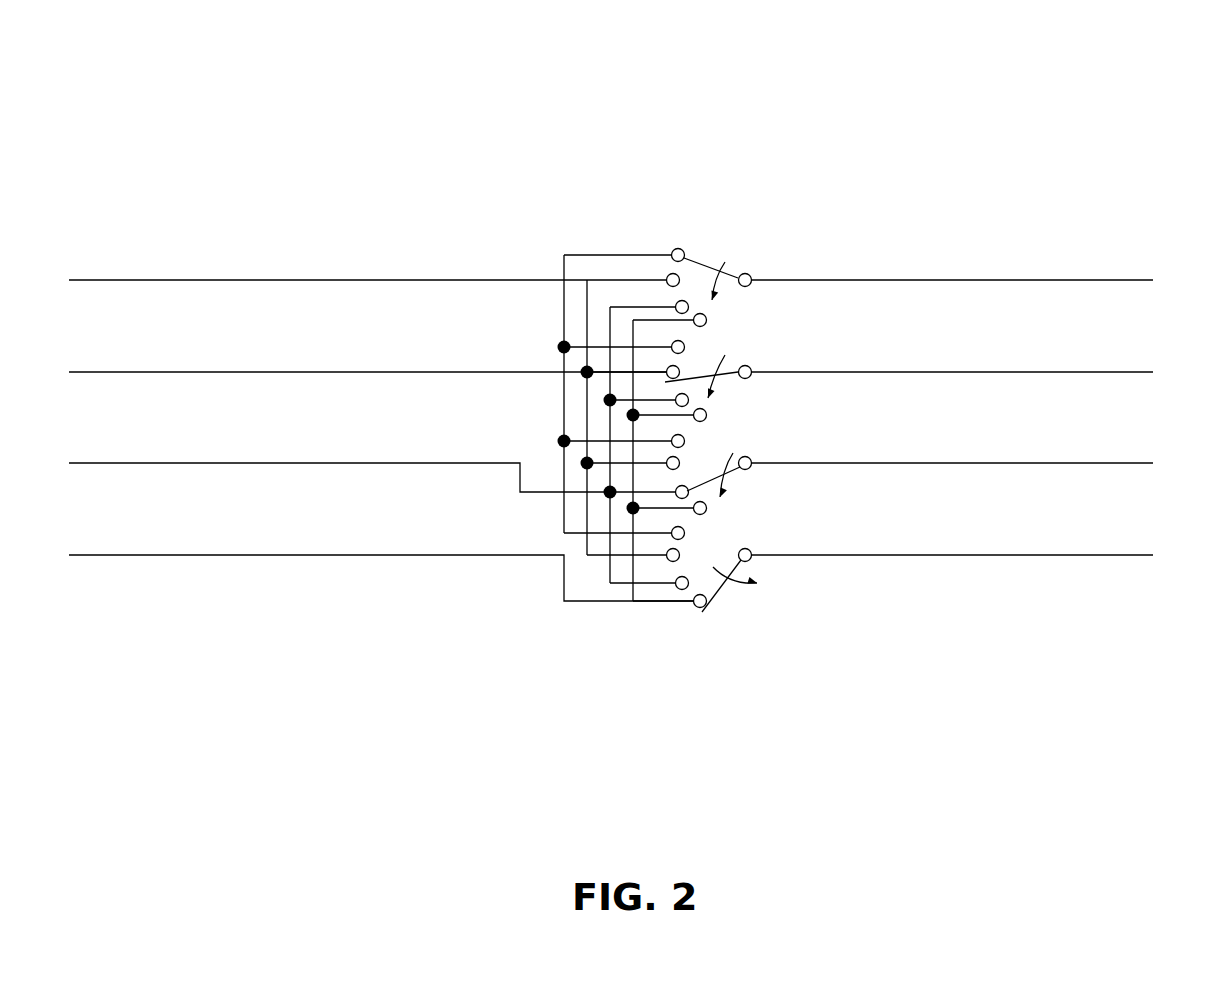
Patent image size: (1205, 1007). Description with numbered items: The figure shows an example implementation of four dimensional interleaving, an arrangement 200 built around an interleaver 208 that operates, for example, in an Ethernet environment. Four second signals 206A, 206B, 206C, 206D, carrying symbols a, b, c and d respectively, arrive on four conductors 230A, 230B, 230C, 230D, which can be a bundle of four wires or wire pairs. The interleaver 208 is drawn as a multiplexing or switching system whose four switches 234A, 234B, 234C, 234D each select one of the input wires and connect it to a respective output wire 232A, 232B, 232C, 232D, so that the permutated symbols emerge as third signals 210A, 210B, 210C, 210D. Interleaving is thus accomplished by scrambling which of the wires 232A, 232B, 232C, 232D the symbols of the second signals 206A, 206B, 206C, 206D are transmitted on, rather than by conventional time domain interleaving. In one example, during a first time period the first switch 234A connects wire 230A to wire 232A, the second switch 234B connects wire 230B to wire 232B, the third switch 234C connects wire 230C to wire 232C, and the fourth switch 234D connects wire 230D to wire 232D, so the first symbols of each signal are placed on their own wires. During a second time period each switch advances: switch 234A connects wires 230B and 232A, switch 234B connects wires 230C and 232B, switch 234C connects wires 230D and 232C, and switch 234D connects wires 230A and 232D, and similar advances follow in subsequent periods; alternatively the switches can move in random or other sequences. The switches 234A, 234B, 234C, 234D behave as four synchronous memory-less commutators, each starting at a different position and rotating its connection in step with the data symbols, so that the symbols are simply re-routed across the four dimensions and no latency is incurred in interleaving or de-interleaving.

The data shuffling system 200 is at (1027, 130).
The second signal 206A is at (388, 210).
The second signal 206B is at (388, 298).
The second signal 206C is at (388, 390).
The second signal 206D is at (393, 485).
The interleaver 208 is at (630, 238).
The third signal 210A is at (1085, 212).
The third signal 210B is at (1090, 288).
The third signal 210C is at (1087, 388).
The third signal 210D is at (1090, 480).
The conductor 230A is at (97, 280).
The conductor 230B is at (97, 372).
The conductor 230C is at (97, 463).
The conductor 230D is at (100, 556).
The first wire 232A is at (810, 280).
The second wire 232B is at (810, 372).
The wire 232C is at (810, 463).
The wire 232D is at (813, 556).
The first switch 234A is at (700, 268).
The second switch 234B is at (695, 377).
The switch 234C is at (703, 480).
The fourth switch 234D is at (710, 590).